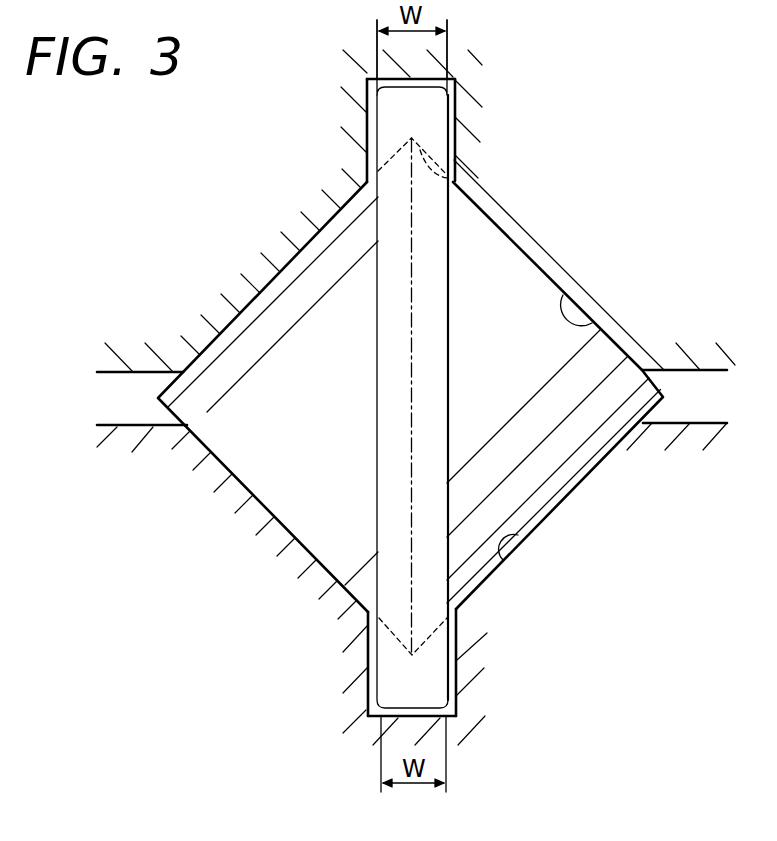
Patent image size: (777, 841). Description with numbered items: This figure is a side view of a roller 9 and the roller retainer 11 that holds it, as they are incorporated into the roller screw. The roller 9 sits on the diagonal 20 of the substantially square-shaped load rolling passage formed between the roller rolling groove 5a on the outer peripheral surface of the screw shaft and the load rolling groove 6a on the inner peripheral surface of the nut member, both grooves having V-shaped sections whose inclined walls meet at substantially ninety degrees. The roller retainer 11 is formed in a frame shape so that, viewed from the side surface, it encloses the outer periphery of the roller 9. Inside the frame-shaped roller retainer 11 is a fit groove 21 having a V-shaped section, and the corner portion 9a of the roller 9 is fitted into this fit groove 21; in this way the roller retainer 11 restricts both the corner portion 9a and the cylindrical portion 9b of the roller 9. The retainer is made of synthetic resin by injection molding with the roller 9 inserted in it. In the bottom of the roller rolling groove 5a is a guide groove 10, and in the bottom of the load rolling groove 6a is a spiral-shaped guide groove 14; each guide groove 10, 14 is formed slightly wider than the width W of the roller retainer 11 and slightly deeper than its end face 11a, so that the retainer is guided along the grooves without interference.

The roller 9 is at (598, 365).
The corner portion 9a is at (367, 153).
The cylindrical portion 9b is at (430, 446).
The roller retainer 11 is at (430, 273).
The end face 11a is at (420, 79).
The guide groove 14 is at (420, 79).
The guide groove 10 is at (436, 693).
The fit groove 21 is at (455, 178).
The load rolling groove 6a is at (592, 323).
The roller rolling groove 5a is at (518, 535).
The diagonal 20 is at (415, 551).